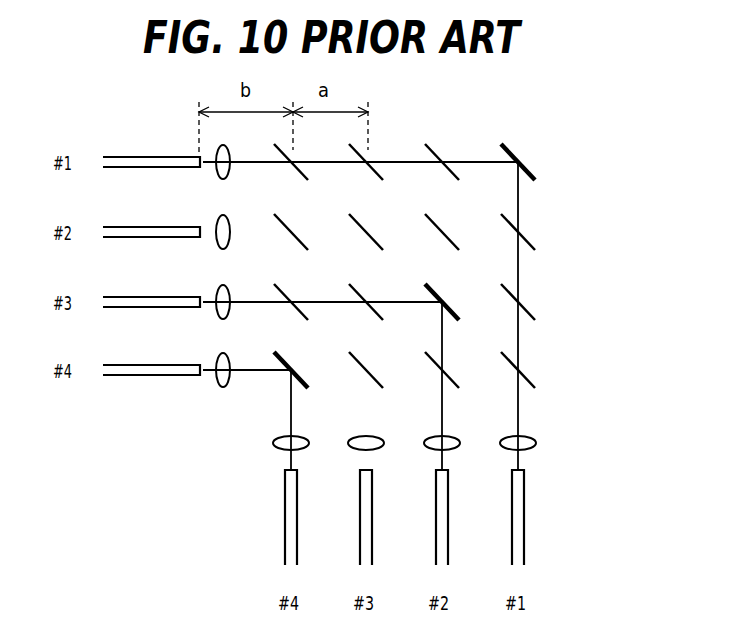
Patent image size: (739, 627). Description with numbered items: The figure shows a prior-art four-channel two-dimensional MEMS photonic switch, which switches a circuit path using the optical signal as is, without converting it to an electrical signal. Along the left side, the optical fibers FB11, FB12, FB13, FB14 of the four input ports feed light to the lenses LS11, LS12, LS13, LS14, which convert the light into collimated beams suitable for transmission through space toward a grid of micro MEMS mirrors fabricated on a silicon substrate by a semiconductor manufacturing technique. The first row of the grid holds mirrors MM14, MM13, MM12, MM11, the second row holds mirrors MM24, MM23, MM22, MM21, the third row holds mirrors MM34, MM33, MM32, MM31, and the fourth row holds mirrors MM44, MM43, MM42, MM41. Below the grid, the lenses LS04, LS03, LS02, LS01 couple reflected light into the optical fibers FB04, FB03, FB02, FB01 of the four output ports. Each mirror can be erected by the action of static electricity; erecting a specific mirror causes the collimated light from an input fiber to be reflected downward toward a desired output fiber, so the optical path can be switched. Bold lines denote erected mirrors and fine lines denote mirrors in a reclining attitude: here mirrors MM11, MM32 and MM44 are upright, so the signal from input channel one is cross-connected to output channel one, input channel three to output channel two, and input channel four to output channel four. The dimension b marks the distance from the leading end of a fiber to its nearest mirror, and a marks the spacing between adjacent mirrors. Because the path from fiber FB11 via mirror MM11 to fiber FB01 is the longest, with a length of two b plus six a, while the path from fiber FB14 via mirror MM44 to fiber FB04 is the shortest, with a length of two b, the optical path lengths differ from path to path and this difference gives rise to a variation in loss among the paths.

The optical fiber of input port #1 FB11 is at (157, 156).
The lens LS11 is at (218, 178).
The optical fiber of output port #1 FB01 is at (520, 525).
The lens LS01 is at (524, 448).
The optical fiber of input port #2 FB12 is at (165, 226).
The lens LS12 is at (218, 247).
The optical fiber of output port #2 FB02 is at (444, 525).
The lens LS02 is at (448, 448).
The optical fiber of input port #3 FB13 is at (158, 296).
The lens LS13 is at (218, 315).
The optical fiber of output port #3 FB03 is at (368, 525).
The lens LS03 is at (372, 448).
The optical fiber of input port #4 FB14 is at (167, 364).
The lens LS14 is at (218, 383).
The optical fiber of output port #4 FB04 is at (293, 525).
The lens LS04 is at (297, 448).
The micro MEMS mirror MM14 is at (290, 158).
The micro MEMS mirror MM13 is at (368, 158).
The micro MEMS mirror MM12 is at (443, 158).
The micro MEMS mirror MM11 is at (527, 164).
The micro MEMS mirror MM24 is at (289, 222).
The micro MEMS mirror MM23 is at (366, 232).
The micro MEMS mirror MM22 is at (442, 232).
The micro MEMS mirror MM21 is at (525, 237).
The micro MEMS mirror MM34 is at (286, 295).
The micro MEMS mirror MM33 is at (366, 302).
The micro MEMS mirror MM32 is at (443, 292).
The micro MEMS mirror MM31 is at (525, 307).
The micro MEMS mirror MM44 is at (306, 378).
The micro MEMS mirror MM43 is at (372, 377).
The micro MEMS mirror MM42 is at (452, 378).
The micro MEMS mirror MM41 is at (525, 377).